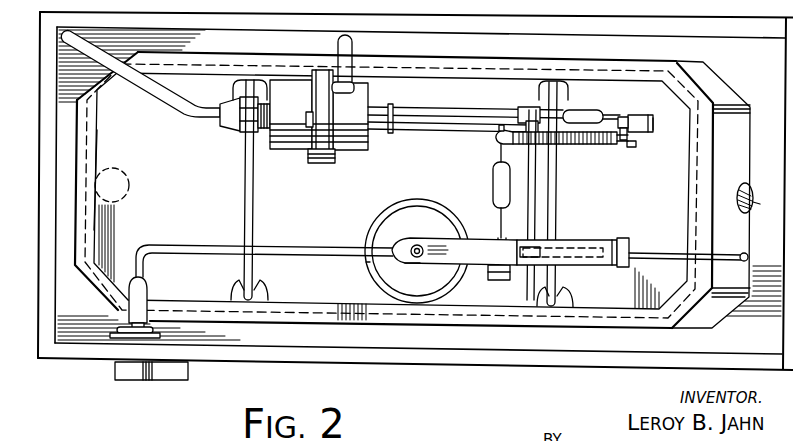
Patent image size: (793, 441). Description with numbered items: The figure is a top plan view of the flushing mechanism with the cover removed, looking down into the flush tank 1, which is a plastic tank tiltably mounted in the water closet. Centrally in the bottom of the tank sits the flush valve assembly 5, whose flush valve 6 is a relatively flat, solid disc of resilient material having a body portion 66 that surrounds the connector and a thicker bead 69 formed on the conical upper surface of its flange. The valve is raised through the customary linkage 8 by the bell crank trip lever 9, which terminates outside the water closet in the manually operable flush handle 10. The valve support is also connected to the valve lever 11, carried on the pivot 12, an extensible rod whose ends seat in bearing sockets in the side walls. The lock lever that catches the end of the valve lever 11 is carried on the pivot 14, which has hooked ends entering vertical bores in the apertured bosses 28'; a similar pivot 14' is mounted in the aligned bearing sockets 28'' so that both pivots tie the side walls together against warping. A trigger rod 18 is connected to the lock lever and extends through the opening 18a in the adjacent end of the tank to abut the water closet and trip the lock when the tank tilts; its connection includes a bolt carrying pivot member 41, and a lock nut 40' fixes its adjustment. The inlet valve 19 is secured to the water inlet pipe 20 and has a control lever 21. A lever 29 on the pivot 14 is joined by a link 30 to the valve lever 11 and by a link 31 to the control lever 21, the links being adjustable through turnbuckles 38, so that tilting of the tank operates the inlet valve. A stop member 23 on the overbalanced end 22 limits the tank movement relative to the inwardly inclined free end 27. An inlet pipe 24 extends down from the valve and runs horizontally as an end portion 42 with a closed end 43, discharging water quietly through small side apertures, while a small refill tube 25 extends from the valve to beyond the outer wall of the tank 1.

The flush tank 1 is at (738, 86).
The flush valve assembly 5 is at (453, 209).
The flush valve 6 is at (375, 227).
The linkage 8 is at (417, 244).
The bell crank trip lever 9 is at (193, 245).
The flush handle 10 is at (167, 372).
The valve lever 11 is at (475, 237).
The pivot 12 is at (536, 216).
The pivot 14 is at (567, 194).
The pivot 14' is at (271, 190).
The trigger rod 18 is at (660, 253).
The opening 18a is at (717, 253).
The inlet valve 19 is at (348, 150).
The water inlet pipe 20 is at (177, 108).
The control lever 21 is at (433, 124).
The overbalanced end 22 is at (97, 152).
The stop member 23 is at (132, 181).
The inlet pipe 24 is at (452, 110).
The refill tube 25 is at (355, 33).
The free end 27 is at (745, 167).
The apertured bosses 28' is at (574, 172).
The bearing sockets 28'' is at (270, 165).
The lever 29 is at (603, 147).
The link 30 is at (498, 153).
The link 31 is at (621, 116).
The turnbuckles 38 is at (592, 112).
The lock nut 40' is at (639, 233).
The pivot member 41 is at (598, 245).
The end portion 42 is at (645, 136).
The end of tube 43 is at (654, 126).
The body portion 66 is at (422, 276).
The bead 69 is at (367, 270).